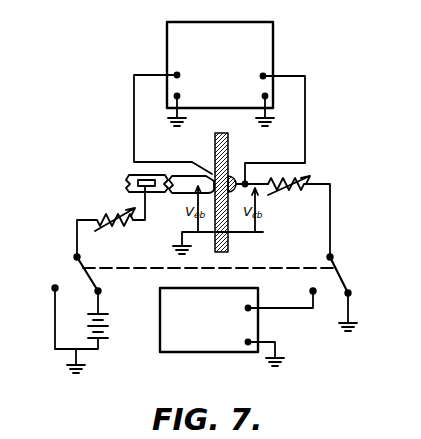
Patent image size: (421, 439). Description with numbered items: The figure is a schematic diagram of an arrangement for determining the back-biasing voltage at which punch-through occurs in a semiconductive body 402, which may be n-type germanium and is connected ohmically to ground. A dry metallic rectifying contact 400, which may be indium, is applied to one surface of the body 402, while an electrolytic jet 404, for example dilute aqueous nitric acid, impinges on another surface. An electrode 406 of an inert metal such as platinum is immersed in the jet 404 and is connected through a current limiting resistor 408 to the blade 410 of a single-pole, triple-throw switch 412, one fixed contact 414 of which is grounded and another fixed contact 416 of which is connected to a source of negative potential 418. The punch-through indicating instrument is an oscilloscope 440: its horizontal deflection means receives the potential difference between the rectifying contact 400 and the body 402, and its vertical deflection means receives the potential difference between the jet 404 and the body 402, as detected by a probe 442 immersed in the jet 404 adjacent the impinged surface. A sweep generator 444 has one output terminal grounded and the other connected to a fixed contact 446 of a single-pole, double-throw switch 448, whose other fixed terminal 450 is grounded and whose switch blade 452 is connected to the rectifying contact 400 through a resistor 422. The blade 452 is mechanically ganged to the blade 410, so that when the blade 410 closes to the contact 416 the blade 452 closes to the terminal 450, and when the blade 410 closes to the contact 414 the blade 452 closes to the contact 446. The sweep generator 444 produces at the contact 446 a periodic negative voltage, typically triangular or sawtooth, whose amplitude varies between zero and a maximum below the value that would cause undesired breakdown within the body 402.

The metallic rectifying contact 400 is at (234, 178).
The semiconductive body 402 is at (227, 148).
The electrolytic jet 404 is at (181, 216).
The electrode 406 is at (143, 175).
The current limiting resistor 408 is at (113, 207).
The blade 410 is at (84, 265).
The single-pole, triple-throw switch 412 is at (85, 269).
The fixed contact 414 is at (54, 290).
The fixed contact 416 is at (101, 291).
The source of negative potential 418 is at (109, 322).
The current-limiting resistor 422 is at (289, 191).
The oscilloscope 440 is at (274, 33).
The probe 442 is at (214, 170).
The sweep generator 444 is at (186, 352).
The fixed contact 446 is at (313, 290).
The single-pole, double-throw switch 448 is at (370, 287).
The fixed terminal 450 is at (349, 300).
The switch blade 452 is at (343, 279).